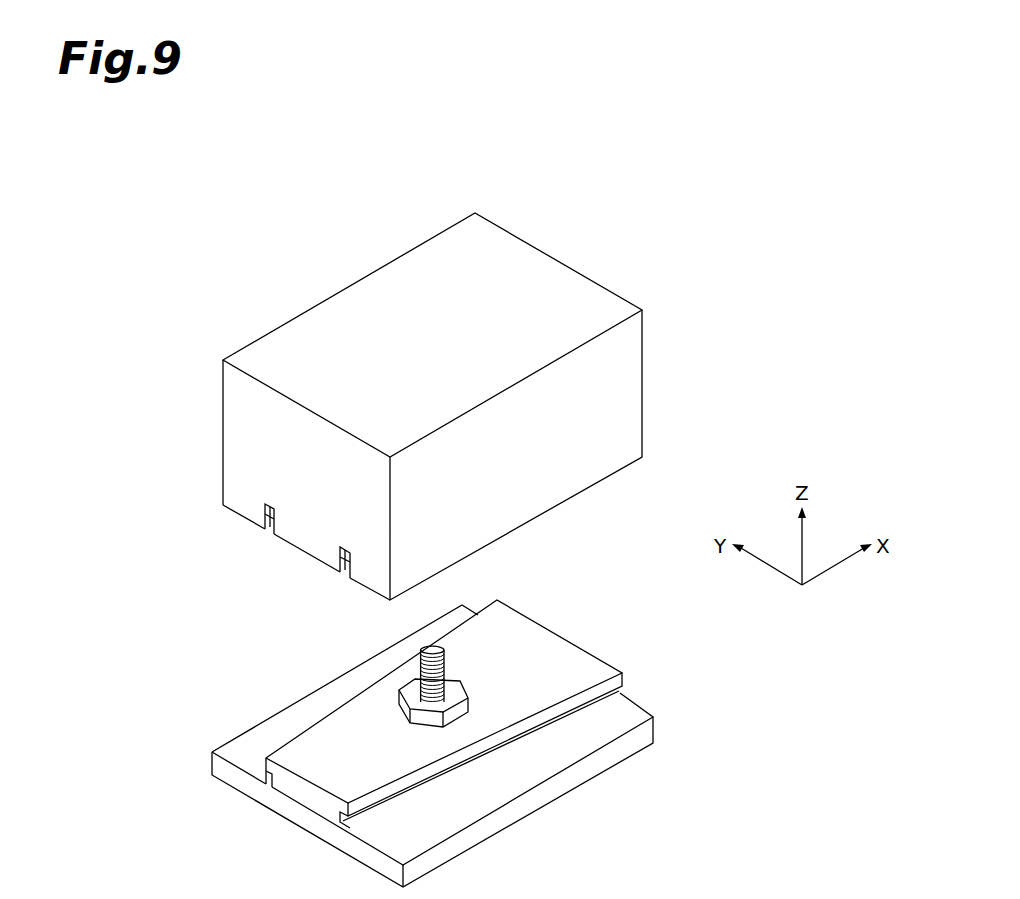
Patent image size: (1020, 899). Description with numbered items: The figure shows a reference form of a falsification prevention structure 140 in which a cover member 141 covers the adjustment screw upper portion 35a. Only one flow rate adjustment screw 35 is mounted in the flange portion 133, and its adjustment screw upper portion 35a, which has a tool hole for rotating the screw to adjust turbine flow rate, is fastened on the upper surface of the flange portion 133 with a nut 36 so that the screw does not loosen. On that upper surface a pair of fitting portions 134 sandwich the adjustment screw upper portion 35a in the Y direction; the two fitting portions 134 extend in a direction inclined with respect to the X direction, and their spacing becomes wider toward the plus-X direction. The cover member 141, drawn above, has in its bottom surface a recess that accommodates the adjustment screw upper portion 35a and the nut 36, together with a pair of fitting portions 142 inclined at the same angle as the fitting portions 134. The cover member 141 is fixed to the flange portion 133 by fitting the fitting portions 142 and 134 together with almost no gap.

The falsification prevention structure 140 is at (742, 368).
The cover member 141 is at (397, 318).
The fitting portions 142 is at (347, 554).
The flange portion 133 is at (641, 740).
The fitting portions 134 is at (348, 826).
The flow rate adjustment screw 35 is at (548, 628).
The adjustment screw upper portion 35a is at (433, 645).
The nut 36 is at (452, 716).